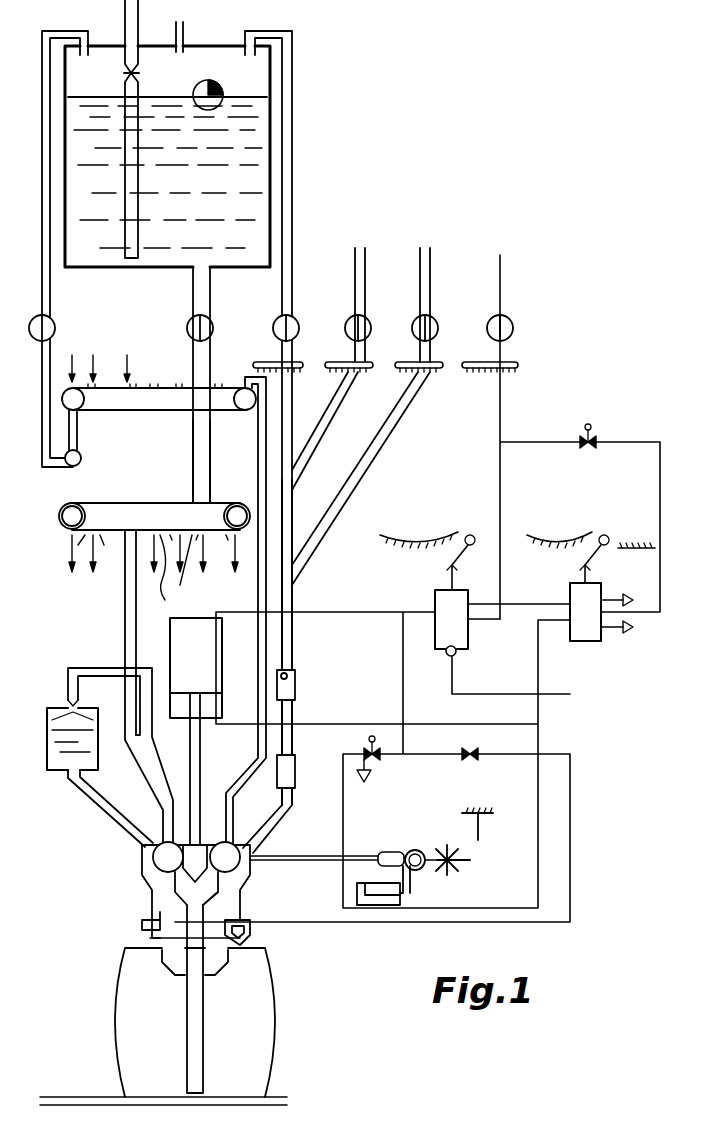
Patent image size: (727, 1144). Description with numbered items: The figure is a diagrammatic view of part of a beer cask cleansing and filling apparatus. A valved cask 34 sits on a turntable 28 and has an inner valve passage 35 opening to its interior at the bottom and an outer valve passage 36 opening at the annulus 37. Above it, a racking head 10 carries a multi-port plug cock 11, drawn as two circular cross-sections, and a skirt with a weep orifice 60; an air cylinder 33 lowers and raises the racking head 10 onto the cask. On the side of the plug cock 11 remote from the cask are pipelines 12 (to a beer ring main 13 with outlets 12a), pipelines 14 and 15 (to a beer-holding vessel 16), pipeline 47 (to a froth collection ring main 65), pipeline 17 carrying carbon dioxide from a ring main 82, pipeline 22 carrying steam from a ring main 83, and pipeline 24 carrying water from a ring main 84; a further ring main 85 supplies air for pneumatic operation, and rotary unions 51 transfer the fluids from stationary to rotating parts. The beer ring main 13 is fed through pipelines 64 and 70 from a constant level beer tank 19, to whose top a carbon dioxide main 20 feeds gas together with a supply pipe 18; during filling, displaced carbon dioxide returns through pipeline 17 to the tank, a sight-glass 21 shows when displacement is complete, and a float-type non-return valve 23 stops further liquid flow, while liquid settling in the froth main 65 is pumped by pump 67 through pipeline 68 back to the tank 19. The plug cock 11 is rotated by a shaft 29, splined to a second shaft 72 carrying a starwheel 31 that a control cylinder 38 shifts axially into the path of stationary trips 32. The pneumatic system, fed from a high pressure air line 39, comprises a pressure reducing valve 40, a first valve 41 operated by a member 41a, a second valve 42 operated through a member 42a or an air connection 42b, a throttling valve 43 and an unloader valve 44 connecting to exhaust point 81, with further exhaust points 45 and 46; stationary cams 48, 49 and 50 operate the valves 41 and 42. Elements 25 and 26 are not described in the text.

The racking head 10 is at (152, 858).
The multi-port plug cock 11 is at (162, 866).
The pipeline to beer ring main 12 is at (125, 600).
The outlets on beer main 12a is at (40, 545).
The beer ring main 13 is at (154, 516).
The pipeline 14 is at (110, 822).
The pipeline to beer-holding vessel 15 is at (78, 668).
The beer-holding vessel 16 is at (50, 757).
The carbon dioxide pipeline 17 is at (292, 594).
The supply pipe 18 is at (292, 196).
The constant level beer tank 19 is at (160, 272).
The carbon dioxide main 20 is at (183, 32).
The sight-glass 21 is at (295, 778).
The steam pipeline 22 is at (325, 422).
The float-type non-return valve 23 is at (295, 690).
The water pipeline 24 is at (196, 88).
The clamp 25 is at (165, 920).
The outlet channel 26 is at (222, 906).
The turntable 28 is at (125, 22).
The shaft 29 is at (298, 856).
The starwheel 31 is at (458, 866).
The trips 32 is at (482, 834).
The air cylinder 33 is at (196, 731).
The valved cask 34 is at (117, 1026).
The inner valve passage 35 is at (203, 1042).
The outer valve passage 36 is at (172, 970).
The annulus 37 is at (218, 970).
The control cylinder 38 is at (378, 906).
The high pressure air line 39 is at (500, 402).
The pressure reducing valve 40 is at (586, 448).
The first valve 41 is at (590, 640).
The operating member 41a is at (585, 565).
The second valve 42 is at (440, 603).
The operating member 42a is at (474, 562).
The air pressure connection 42b is at (458, 650).
The throttling valve 43 is at (480, 750).
The unloader valve 44 is at (366, 748).
The exhaust point 45 is at (633, 597).
The exhaust point 46 is at (633, 627).
The pipeline to froth collection ring main 47 is at (255, 770).
The cam 48 is at (410, 537).
The cam 49 is at (559, 537).
The cam 50 is at (655, 546).
The rotary unions 51 is at (55, 330).
The weep orifice 60 is at (250, 943).
The pipeline 64 is at (193, 470).
The froth collection ring main 65 is at (150, 411).
The pump 67 is at (81, 460).
The pipeline 68 is at (50, 292).
The pipeline 70 is at (207, 292).
The second shaft 72 is at (388, 852).
The exhaust point 81 is at (372, 778).
The carbon dioxide ring main 82 is at (300, 360).
The steam ring main 83 is at (370, 360).
The water ring main 84 is at (440, 360).
The air ring main 85 is at (520, 364).